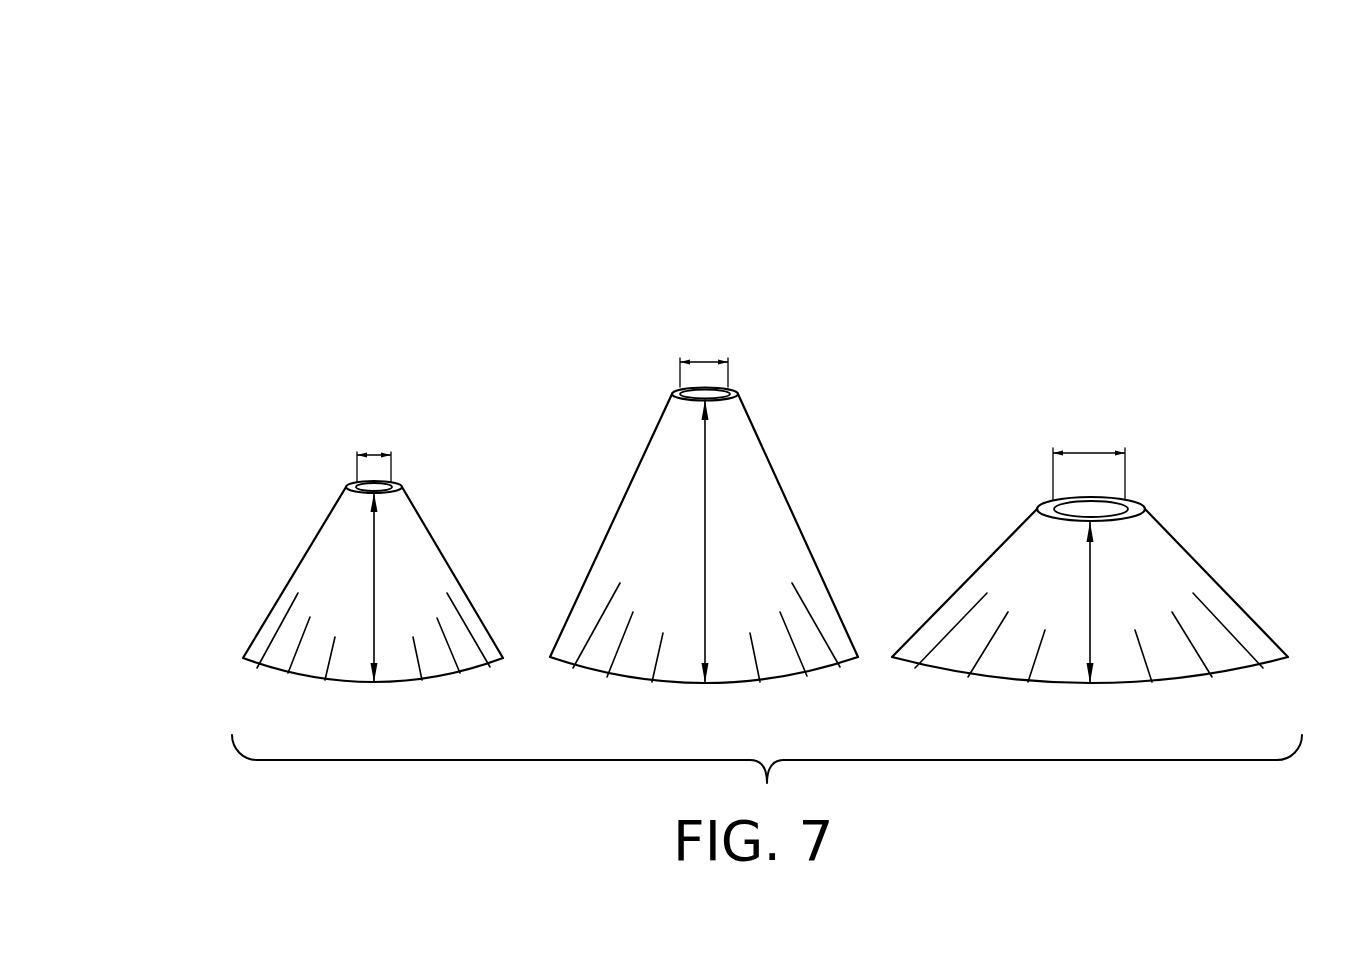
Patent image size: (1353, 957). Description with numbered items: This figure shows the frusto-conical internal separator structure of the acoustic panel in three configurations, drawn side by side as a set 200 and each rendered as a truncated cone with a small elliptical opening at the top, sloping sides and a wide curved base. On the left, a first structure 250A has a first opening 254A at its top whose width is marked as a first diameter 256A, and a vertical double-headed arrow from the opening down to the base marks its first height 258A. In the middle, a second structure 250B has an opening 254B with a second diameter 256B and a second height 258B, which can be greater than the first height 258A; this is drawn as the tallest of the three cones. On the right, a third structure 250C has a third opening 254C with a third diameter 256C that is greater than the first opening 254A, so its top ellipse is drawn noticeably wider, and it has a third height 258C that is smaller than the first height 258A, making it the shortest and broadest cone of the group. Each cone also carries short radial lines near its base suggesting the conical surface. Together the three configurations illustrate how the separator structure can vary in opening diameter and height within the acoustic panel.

The set of light shades 200 is at (1020, 142).
The first structure 250A is at (293, 573).
The first opening 254A is at (367, 488).
The first diameter 256A is at (377, 453).
The first height 258A is at (370, 557).
The second structure 250B is at (608, 530).
The opening 254B is at (700, 397).
The second diameter 256B is at (705, 357).
The second height 258B is at (702, 493).
The third structure 250C is at (958, 588).
The third opening 254C is at (1078, 510).
The third diameter 256C is at (1090, 450).
The third height 258C is at (1087, 580).